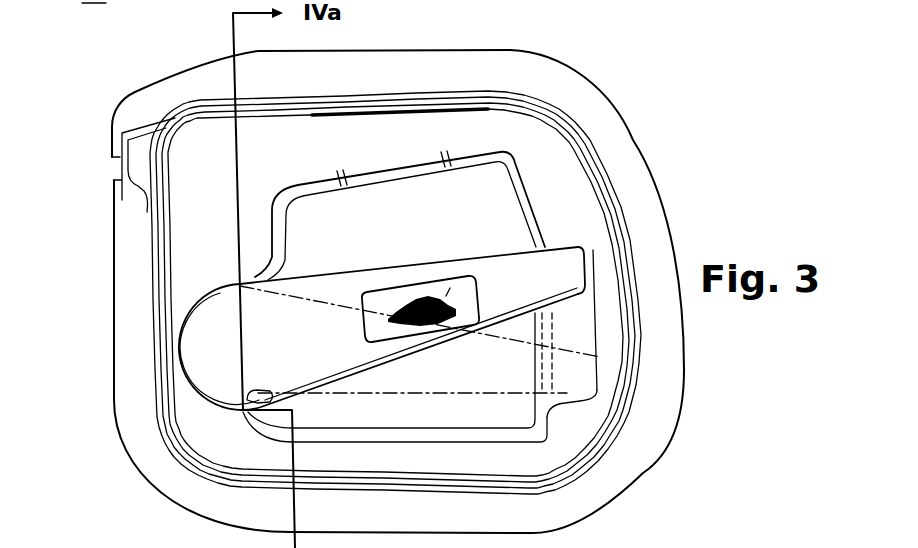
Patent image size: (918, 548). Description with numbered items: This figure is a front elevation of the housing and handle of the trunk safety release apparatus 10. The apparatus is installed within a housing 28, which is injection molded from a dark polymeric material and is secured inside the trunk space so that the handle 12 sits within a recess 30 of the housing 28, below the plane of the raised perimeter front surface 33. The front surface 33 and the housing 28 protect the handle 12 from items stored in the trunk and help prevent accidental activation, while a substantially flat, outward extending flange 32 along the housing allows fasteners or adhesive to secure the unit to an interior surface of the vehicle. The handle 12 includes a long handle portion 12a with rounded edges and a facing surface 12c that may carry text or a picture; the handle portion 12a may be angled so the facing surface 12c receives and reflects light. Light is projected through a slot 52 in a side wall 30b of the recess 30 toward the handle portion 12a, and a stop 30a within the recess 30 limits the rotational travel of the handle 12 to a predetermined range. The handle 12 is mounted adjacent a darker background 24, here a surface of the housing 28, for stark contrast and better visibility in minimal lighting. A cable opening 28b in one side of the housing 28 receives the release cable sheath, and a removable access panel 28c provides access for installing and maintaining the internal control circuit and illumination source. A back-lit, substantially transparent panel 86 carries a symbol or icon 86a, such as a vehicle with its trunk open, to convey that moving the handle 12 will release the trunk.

The safety release apparatus 10 is at (95, 3).
The handle 12 is at (205, 336).
The handle portion 12a is at (355, 330).
The facing surface 12c is at (507, 280).
The background 24 is at (485, 223).
The housing 28 is at (200, 452).
The cable opening 28b is at (115, 167).
The removable access panel 28c is at (448, 103).
The recess 30 is at (500, 370).
The stop 30a is at (592, 392).
The side wall 30b is at (383, 183).
The flange 32 is at (639, 459).
The front surface 33 is at (195, 243).
The slot 52 is at (340, 176).
The transparent panel 86 is at (383, 300).
The symbol or icon 86a is at (420, 305).